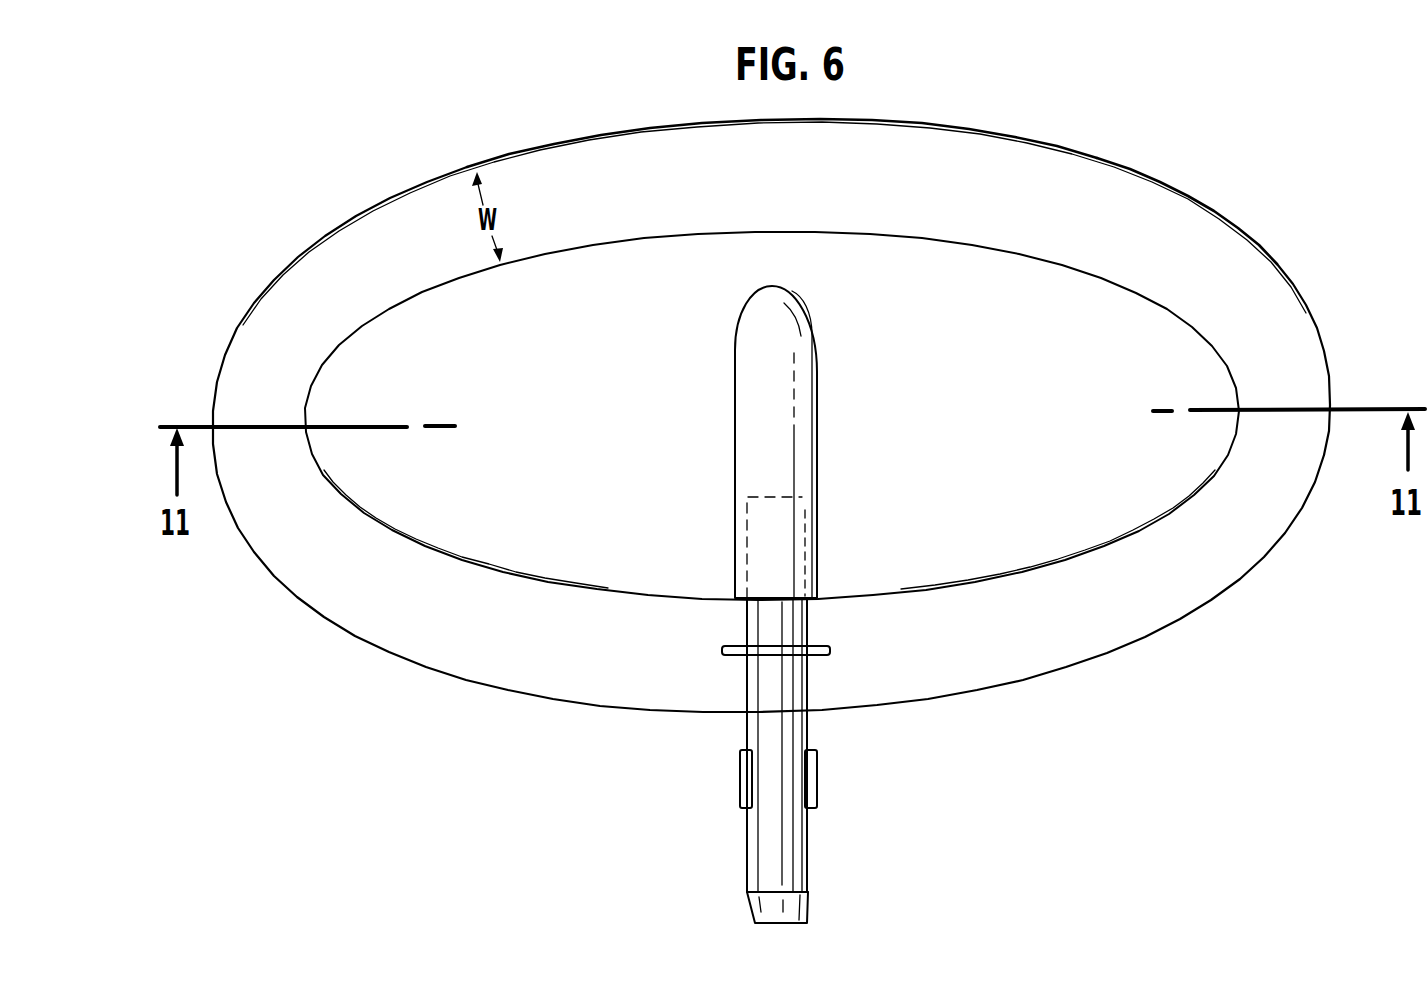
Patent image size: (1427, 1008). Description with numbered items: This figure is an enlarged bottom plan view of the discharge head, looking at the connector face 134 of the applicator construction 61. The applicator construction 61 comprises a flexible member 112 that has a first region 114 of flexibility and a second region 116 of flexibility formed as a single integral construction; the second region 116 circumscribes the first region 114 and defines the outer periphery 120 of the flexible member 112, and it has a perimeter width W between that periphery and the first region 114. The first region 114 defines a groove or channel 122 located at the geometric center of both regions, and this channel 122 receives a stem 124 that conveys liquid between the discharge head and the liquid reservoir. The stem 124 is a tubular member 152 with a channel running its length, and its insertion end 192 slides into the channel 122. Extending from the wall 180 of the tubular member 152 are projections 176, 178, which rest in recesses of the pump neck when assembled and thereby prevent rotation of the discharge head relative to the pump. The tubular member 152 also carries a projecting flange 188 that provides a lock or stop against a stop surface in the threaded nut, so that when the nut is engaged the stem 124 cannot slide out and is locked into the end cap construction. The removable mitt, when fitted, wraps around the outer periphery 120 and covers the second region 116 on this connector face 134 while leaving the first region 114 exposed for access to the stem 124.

The applicator construction 61 is at (556, 108).
The flexible member 112 is at (1141, 168).
The first region 114 is at (977, 452).
The second region 116 is at (1290, 482).
The outer periphery 120 is at (1246, 250).
The channel 122 is at (744, 327).
The stem 124 is at (748, 857).
The connector face 134 is at (1029, 115).
The tubular member 152 is at (748, 727).
The projection 176 is at (818, 778).
The projection 178 is at (738, 775).
The wall 180 is at (808, 862).
The projecting flange 188 is at (830, 650).
The insertion end 192 is at (752, 495).